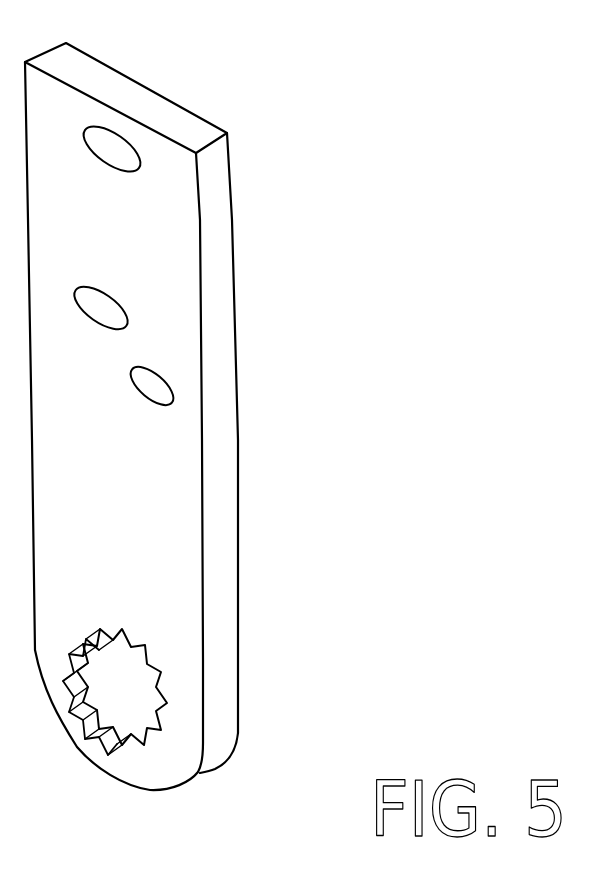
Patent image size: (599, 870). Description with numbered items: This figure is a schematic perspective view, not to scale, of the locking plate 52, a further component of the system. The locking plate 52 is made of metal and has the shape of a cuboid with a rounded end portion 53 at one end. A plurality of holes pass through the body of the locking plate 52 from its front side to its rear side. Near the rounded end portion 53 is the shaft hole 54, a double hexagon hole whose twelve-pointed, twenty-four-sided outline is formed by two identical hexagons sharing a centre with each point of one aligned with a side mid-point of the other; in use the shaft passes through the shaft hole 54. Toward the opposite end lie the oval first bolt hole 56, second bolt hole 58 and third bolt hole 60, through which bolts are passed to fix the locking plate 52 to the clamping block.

The locking plate 52 is at (328, 111).
The rounded end portion 53 is at (115, 778).
The shaft hole 54 is at (137, 692).
The first bolt hole 56 is at (117, 135).
The second bolt hole 58 is at (125, 313).
The third bolt hole 60 is at (170, 384).